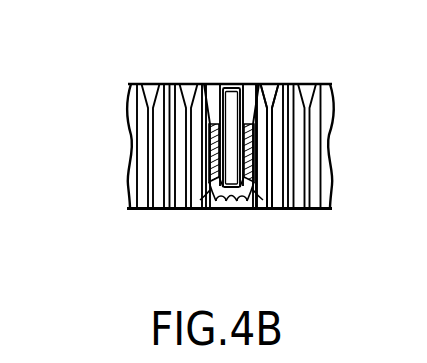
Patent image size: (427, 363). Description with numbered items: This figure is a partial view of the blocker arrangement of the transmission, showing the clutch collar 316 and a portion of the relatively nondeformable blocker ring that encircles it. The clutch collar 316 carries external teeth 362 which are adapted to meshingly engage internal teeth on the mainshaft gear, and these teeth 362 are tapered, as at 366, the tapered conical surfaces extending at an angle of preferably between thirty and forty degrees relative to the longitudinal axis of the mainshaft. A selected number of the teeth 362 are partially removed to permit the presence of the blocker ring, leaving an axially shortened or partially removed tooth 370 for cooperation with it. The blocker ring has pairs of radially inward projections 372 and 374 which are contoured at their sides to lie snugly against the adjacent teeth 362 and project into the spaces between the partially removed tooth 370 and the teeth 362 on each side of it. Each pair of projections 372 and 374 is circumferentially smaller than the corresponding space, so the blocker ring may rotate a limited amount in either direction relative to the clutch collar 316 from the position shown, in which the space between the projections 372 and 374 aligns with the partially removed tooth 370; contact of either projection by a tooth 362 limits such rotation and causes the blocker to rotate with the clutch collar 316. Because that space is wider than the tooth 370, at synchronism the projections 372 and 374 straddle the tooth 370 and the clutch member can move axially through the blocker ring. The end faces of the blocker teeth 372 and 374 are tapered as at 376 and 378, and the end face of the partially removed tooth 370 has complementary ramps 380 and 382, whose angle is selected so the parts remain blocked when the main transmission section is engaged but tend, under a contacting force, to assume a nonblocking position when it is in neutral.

The clutch collar 316 is at (345, 96).
The external teeth 362 is at (119, 198).
The taper 366 is at (269, 92).
The radially inward projection 372 is at (254, 85).
The radially inward projection 374 is at (208, 124).
The taper 378 is at (220, 194).
The ramp 382 is at (207, 200).
The partially removed tooth 370 is at (232, 200).
The ramp 380 is at (245, 192).
The taper 376 is at (251, 190).